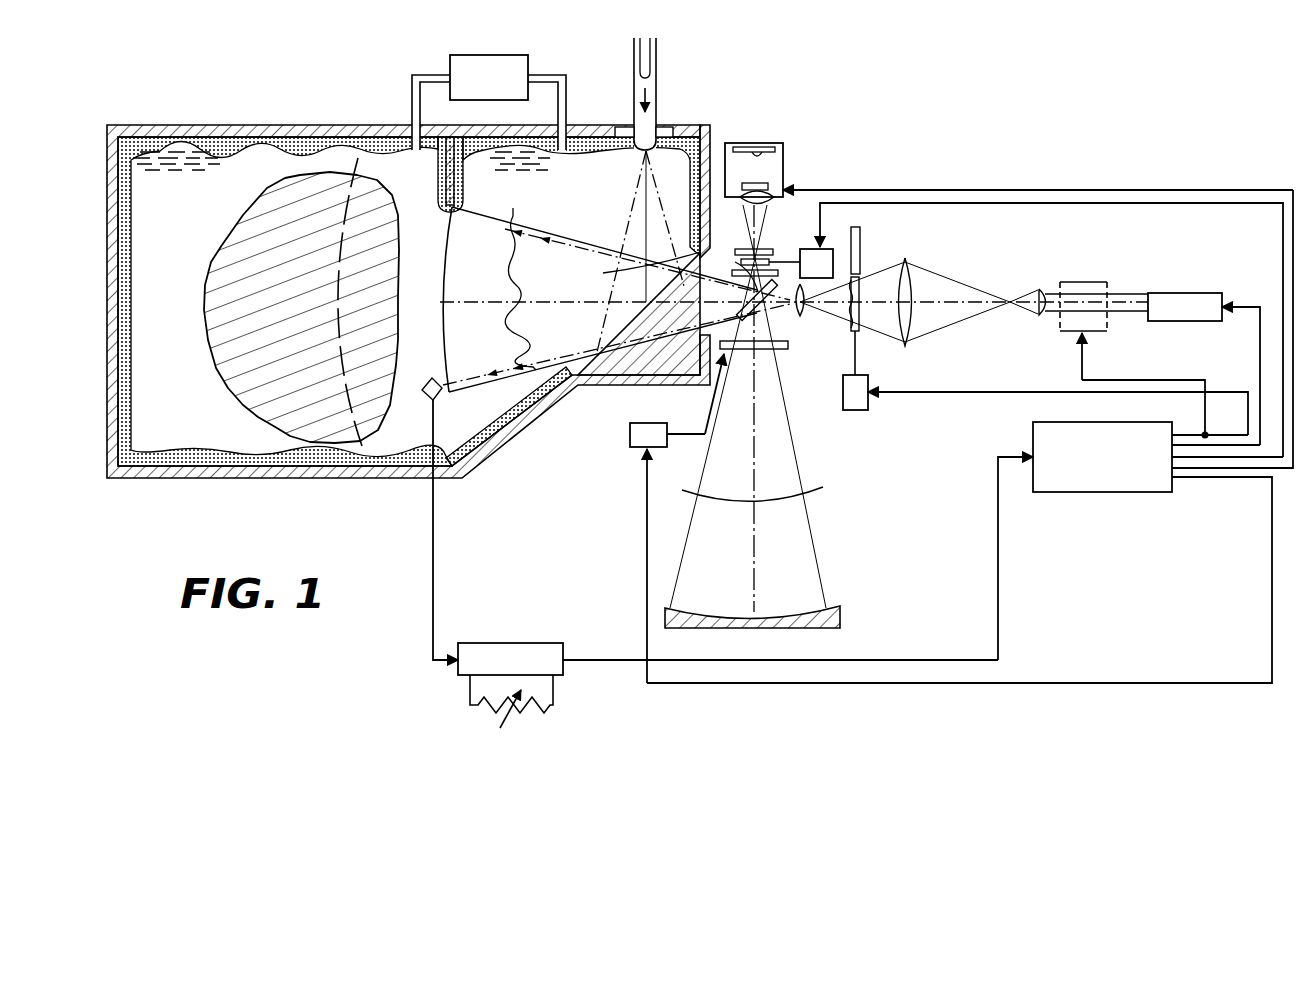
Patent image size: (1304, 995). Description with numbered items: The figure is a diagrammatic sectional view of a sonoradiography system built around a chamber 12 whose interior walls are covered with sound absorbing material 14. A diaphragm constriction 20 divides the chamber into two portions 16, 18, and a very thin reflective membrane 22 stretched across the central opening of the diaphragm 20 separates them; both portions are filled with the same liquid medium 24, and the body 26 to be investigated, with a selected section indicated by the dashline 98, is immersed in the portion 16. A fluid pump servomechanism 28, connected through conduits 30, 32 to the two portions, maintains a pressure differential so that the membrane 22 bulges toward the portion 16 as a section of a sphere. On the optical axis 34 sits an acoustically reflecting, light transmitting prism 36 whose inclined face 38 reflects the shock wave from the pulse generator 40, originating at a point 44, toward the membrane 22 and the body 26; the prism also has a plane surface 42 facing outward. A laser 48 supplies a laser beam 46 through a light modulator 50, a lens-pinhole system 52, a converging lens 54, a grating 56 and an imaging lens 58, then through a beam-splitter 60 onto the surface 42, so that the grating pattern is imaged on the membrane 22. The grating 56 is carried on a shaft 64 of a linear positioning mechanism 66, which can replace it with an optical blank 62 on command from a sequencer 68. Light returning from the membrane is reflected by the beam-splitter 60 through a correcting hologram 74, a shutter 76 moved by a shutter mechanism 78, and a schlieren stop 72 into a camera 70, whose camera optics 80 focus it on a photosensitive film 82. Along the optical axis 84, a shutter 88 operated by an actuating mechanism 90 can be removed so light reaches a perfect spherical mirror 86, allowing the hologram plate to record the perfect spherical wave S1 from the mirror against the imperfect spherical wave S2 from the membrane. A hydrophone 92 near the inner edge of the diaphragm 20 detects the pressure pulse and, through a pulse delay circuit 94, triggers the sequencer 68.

The chamber 12 is at (240, 120).
The sound absorbing material 14 is at (224, 140).
The chamber portion 16 is at (183, 253).
The chamber portion 18 is at (599, 223).
The diaphragm constriction 20 is at (457, 189).
The membrane 22 is at (452, 252).
The liquid medium 24 is at (161, 163).
The body 26 is at (207, 311).
The fluid pump servomechanism 28 is at (491, 55).
The conduit 30 is at (419, 74).
The conduit 32 is at (567, 75).
The optical axis 34 is at (480, 303).
The prism 36 is at (678, 339).
The inclined face 38 is at (622, 273).
The pulse generator 40 is at (659, 80).
The plane surface 42 is at (749, 296).
The point 44 is at (652, 135).
The laser beam 46 is at (1128, 302).
The laser 48 is at (1186, 293).
The light modulator 50 is at (1076, 282).
The lens-pinhole system 52 is at (1040, 290).
The converging lens 54 is at (912, 290).
The grating 56 is at (860, 290).
The imaging lens 58 is at (798, 315).
The beam-splitter 60 is at (801, 289).
The optical blank 62 is at (861, 248).
The shaft 64 is at (858, 353).
The linear positioning mechanism 66 is at (843, 393).
The sequencer 68 is at (1082, 494).
The camera 70 is at (772, 138).
The schlieren stop 72 is at (768, 250).
The correcting hologram 74 is at (741, 272).
The shutter 76 is at (770, 262).
The shutter mechanism 78 is at (829, 275).
The camera optics 80 is at (752, 206).
The photosensitive film 82 is at (759, 147).
The optical axis 84 is at (753, 541).
The spherical mirror 86 is at (843, 611).
The shutter 88 is at (788, 346).
The actuating mechanism 90 is at (660, 446).
The hydrophone 92 is at (426, 383).
The pulse delay circuit 94 is at (488, 643).
The selected section 98 is at (362, 170).
The perfect spherical wave S1 is at (814, 493).
The imperfect spherical wave S2 is at (514, 248).